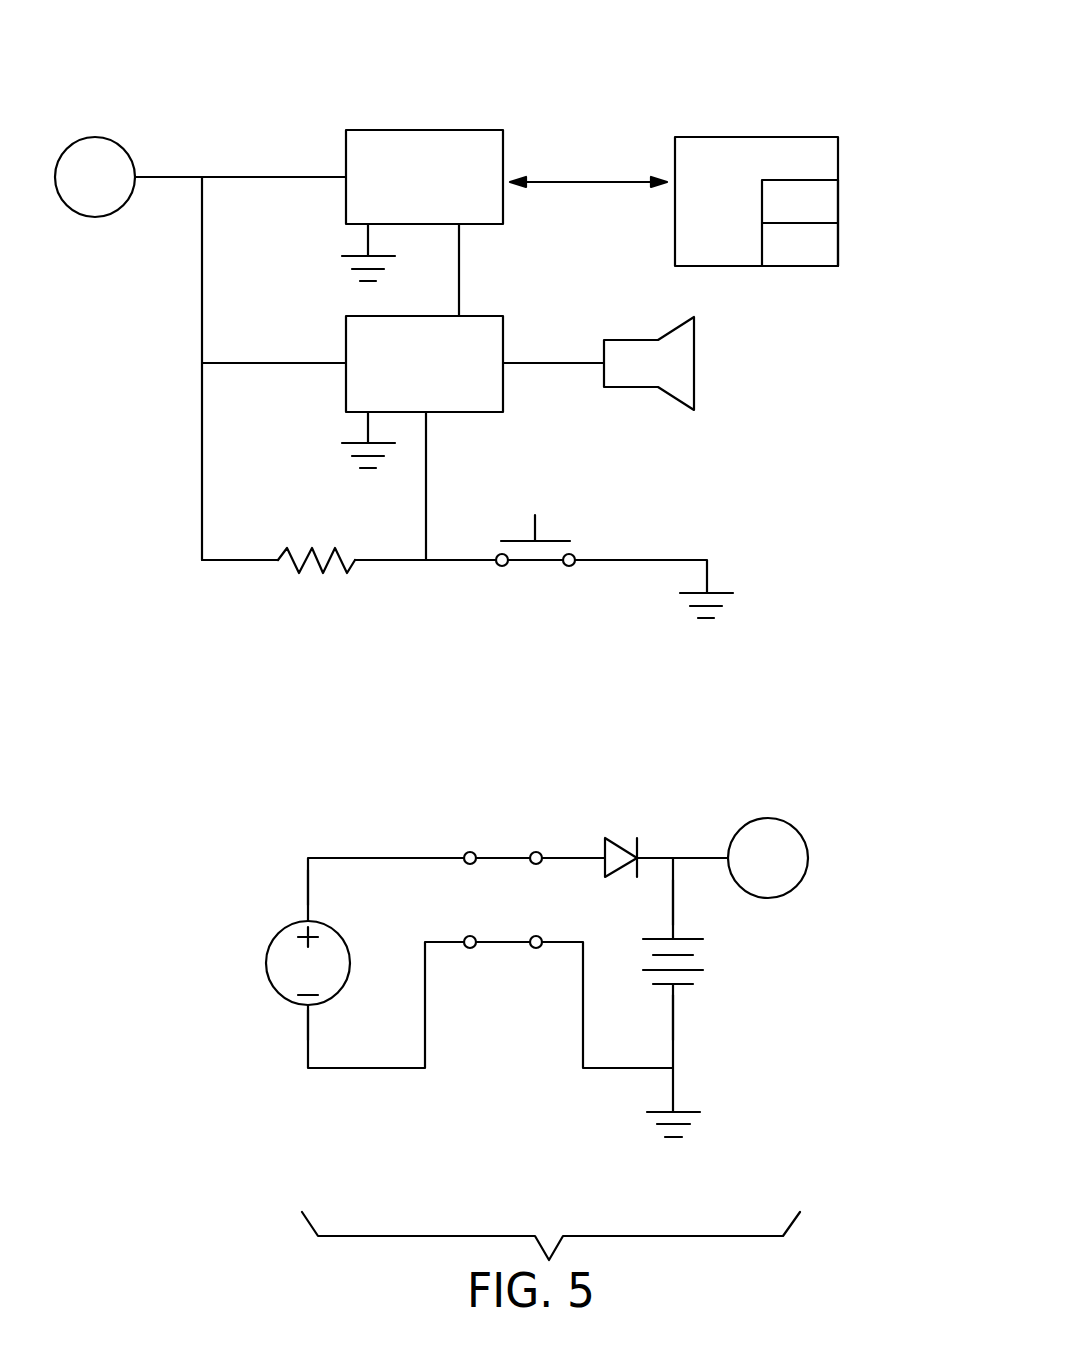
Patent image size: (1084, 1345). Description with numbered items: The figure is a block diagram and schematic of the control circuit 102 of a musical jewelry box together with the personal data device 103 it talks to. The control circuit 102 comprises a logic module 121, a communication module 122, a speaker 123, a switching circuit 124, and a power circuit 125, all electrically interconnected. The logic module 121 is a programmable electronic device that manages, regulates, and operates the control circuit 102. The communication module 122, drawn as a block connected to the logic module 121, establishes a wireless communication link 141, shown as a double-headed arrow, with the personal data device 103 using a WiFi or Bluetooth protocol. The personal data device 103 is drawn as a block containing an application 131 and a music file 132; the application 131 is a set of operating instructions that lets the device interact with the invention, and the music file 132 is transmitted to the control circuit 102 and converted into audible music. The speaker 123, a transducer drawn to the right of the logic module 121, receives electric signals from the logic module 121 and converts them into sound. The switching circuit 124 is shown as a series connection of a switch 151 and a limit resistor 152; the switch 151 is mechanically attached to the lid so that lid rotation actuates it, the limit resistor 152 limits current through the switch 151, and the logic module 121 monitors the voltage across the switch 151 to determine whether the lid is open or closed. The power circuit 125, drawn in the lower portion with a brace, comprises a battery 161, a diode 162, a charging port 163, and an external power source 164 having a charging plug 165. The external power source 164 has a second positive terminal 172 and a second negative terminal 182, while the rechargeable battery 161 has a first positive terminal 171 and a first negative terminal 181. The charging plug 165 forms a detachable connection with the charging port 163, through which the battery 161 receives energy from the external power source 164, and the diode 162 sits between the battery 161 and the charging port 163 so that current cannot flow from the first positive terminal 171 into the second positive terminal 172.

The control circuit 102 is at (95, 114).
The personal data device 103 is at (850, 141).
The logic module 121 is at (490, 320).
The communication module 122 is at (490, 143).
The speaker 123 is at (680, 362).
The switching circuit 124 is at (388, 603).
The power circuit 125 is at (505, 958).
The application 131 is at (830, 202).
The music file 132 is at (832, 245).
The wireless communication link 141 is at (575, 180).
The switch 151 is at (534, 565).
The limit resistor 152 is at (316, 575).
The battery 161 is at (710, 962).
The diode 162 is at (622, 836).
The charging port 163 is at (535, 850).
The external power source 164 is at (265, 958).
The charging plug 165 is at (468, 850).
The first positive terminal 171 is at (675, 914).
The second positive terminal 172 is at (310, 910).
The first negative terminal 181 is at (675, 1003).
The second negative terminal 182 is at (310, 1018).